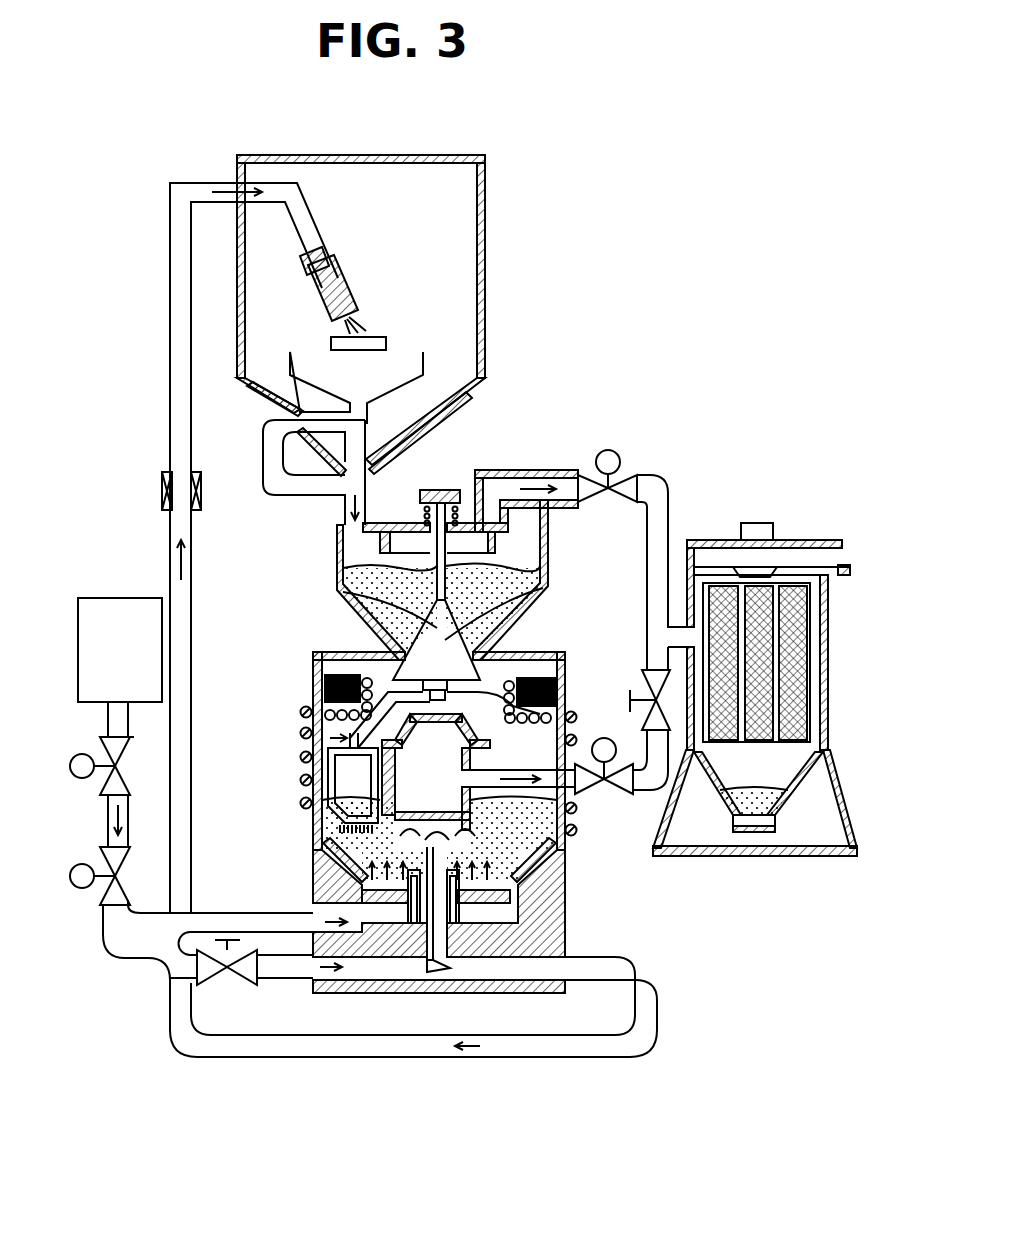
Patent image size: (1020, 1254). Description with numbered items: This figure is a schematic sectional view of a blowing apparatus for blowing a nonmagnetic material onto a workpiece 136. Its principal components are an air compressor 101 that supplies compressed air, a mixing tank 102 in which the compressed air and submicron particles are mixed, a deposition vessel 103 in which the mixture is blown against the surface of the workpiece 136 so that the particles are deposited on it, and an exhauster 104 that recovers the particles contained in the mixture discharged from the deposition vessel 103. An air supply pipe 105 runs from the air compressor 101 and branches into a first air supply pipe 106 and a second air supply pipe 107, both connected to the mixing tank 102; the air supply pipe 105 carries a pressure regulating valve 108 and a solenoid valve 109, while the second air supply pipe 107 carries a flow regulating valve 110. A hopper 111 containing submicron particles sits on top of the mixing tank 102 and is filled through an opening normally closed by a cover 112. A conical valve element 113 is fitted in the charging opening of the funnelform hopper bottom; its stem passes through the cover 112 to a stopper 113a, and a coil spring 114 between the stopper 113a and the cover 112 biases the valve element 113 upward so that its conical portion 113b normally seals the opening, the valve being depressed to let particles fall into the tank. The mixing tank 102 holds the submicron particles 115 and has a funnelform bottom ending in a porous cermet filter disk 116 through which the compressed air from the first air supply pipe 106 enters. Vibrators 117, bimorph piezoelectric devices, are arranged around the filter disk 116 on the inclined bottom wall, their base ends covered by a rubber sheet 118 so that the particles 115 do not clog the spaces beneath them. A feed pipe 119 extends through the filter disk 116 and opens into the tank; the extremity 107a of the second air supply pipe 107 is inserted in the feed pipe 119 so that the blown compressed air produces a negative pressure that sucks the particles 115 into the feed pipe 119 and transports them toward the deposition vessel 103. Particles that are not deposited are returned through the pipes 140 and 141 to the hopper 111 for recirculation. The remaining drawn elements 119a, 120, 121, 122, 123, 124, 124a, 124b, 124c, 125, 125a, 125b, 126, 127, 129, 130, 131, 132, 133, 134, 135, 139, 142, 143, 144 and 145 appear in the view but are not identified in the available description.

The air compressor 101 is at (106, 602).
The mixing tank 102 is at (573, 694).
The deposition vessel 103 is at (503, 205).
The exhauster 104 is at (795, 524).
The air supply pipe 105 is at (108, 815).
The first air supply pipe 106 is at (216, 913).
The second air supply pipe 107 is at (285, 979).
The extremity of the second air supply pipe 107a is at (441, 974).
The pressure regulating valve 108 is at (102, 747).
The solenoid valve 109 is at (102, 862).
The flow regulating valve 110 is at (222, 977).
The hopper 111 is at (549, 548).
The cover 112 is at (392, 523).
The conical valve element 113 is at (343, 604).
The stopper 113a is at (440, 490).
The conical portion 113b is at (547, 583).
The coil spring 114 is at (457, 508).
The submicron particles 115 is at (552, 862).
The cermet filter disk 116 is at (412, 905).
The vibrators 117 is at (330, 880).
The rubber sheet 118 is at (333, 854).
The feed pipe 119 is at (418, 1060).
The pipe inlet 119a is at (328, 901).
The spray nozzle 120 is at (338, 262).
The valve 121 is at (162, 490).
The gas passage 122 is at (398, 935).
The cone 123 is at (468, 665).
The coil 124 is at (300, 741).
The coil turn 124a is at (300, 713).
The coil turn 124b is at (300, 762).
The brush 124c is at (338, 829).
The electrode box 125 is at (326, 786).
The coil turn 125a is at (562, 847).
The coil turn 125b is at (560, 726).
The valve 126 is at (578, 791).
The valve 127 is at (652, 792).
The filter 129 is at (810, 651).
The lid 130 is at (740, 563).
The clamp 131 is at (828, 567).
The collecting cup 132 is at (752, 833).
The heater coil 133 is at (330, 676).
The plate 134 is at (372, 690).
The gas flow 135 is at (328, 738).
The workpiece 136 is at (392, 338).
The chute 139 is at (292, 352).
The return pipe 140 is at (367, 476).
The return pipe 141 is at (275, 498).
The slanted plate 142 is at (270, 409).
The gas pipe 143 is at (548, 470).
The hopper wall 144 is at (343, 549).
The valve 145 is at (632, 476).